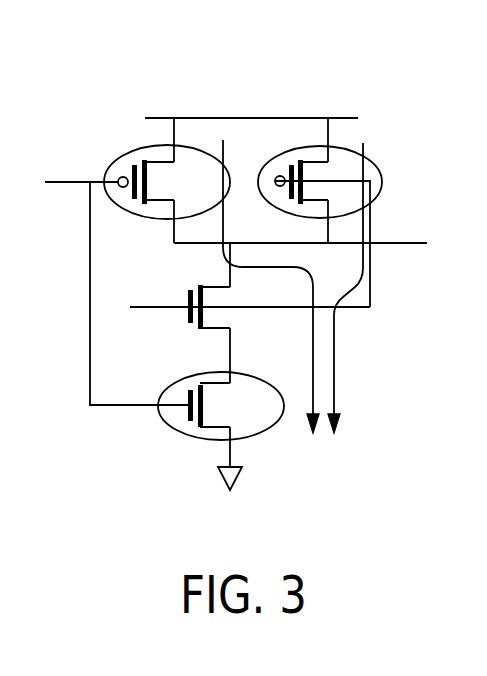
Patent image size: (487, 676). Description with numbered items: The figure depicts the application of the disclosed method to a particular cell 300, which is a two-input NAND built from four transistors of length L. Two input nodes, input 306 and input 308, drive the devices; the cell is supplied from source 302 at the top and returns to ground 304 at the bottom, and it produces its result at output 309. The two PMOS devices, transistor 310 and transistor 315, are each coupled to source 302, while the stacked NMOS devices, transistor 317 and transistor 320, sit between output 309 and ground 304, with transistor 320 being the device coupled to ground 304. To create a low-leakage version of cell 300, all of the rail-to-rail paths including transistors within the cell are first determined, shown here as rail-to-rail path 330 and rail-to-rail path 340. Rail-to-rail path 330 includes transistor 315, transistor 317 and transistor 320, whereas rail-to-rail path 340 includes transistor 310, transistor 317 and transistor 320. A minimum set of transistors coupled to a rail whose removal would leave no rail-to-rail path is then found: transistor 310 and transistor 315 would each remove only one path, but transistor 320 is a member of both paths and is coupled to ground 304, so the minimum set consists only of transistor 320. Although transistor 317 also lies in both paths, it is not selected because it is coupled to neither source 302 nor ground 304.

The cell 300 is at (119, 50).
The source 302 is at (296, 91).
The ground 304 is at (290, 482).
The input 306 is at (62, 157).
The input 308 is at (143, 283).
The output 309 is at (420, 222).
The transistor 310 is at (135, 147).
The transistor 315 is at (352, 148).
The transistor 317 is at (178, 318).
The transistor 320 is at (170, 425).
The rail-to-rail path 330 is at (363, 280).
The rail-to-rail path 340 is at (313, 378).